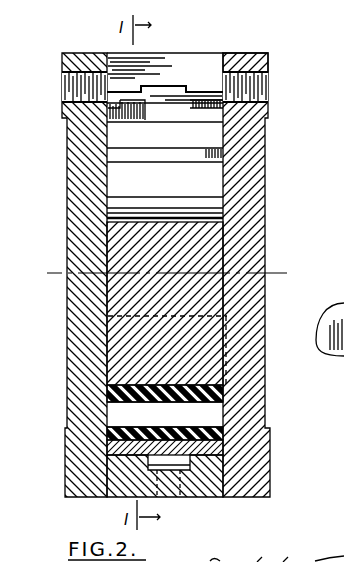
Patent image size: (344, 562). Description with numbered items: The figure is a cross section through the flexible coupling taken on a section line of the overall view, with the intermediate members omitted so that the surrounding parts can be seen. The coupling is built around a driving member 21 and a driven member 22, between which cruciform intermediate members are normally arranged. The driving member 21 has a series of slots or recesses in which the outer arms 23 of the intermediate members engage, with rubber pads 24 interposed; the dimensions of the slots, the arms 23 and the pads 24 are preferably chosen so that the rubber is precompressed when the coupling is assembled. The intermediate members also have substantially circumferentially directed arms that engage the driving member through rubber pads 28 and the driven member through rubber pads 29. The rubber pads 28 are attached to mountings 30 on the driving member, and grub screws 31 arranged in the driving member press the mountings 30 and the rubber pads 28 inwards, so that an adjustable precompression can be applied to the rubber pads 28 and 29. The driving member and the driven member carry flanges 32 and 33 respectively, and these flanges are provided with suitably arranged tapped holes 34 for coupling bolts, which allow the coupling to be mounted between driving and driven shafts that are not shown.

The driving member 21 is at (67, 352).
The driven member 22 is at (227, 398).
The outer arms 23 is at (264, 551).
The rubber pads 24 is at (292, 551).
The rubber pads 28 is at (225, 133).
The rubber pads 29 is at (225, 163).
The mountings 30 is at (107, 108).
The grub screws 31 is at (180, 480).
The flange 32 is at (80, 57).
The flange 33 is at (257, 63).
The tapped holes 34 is at (62, 88).